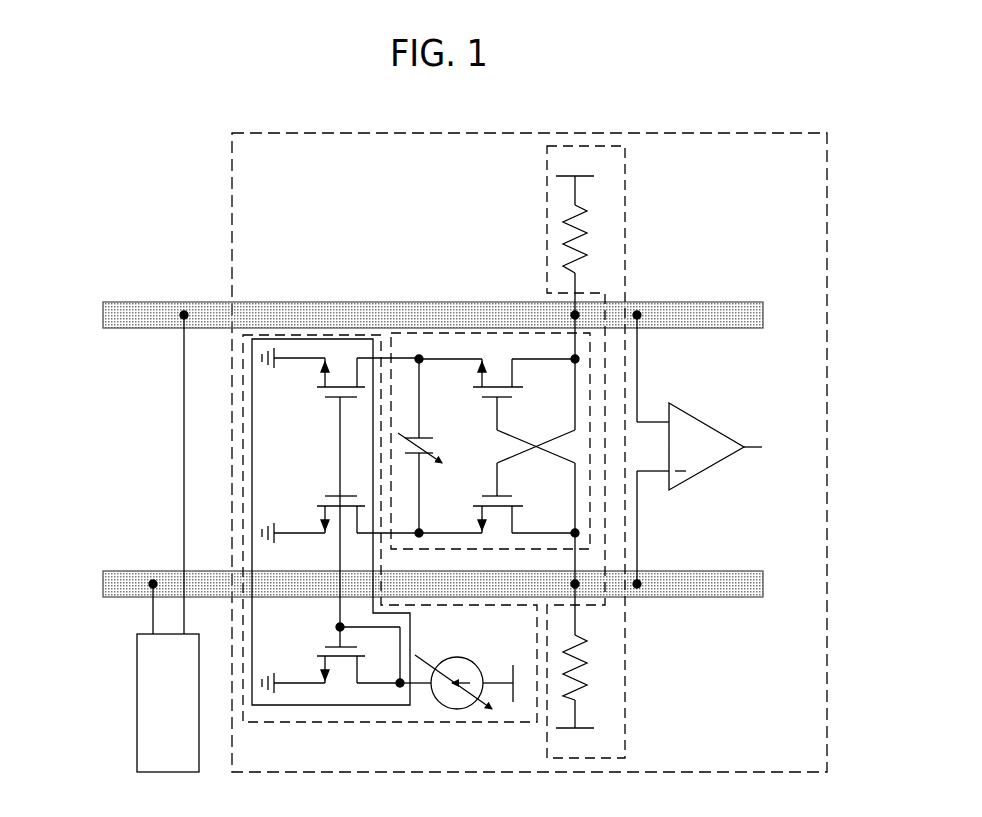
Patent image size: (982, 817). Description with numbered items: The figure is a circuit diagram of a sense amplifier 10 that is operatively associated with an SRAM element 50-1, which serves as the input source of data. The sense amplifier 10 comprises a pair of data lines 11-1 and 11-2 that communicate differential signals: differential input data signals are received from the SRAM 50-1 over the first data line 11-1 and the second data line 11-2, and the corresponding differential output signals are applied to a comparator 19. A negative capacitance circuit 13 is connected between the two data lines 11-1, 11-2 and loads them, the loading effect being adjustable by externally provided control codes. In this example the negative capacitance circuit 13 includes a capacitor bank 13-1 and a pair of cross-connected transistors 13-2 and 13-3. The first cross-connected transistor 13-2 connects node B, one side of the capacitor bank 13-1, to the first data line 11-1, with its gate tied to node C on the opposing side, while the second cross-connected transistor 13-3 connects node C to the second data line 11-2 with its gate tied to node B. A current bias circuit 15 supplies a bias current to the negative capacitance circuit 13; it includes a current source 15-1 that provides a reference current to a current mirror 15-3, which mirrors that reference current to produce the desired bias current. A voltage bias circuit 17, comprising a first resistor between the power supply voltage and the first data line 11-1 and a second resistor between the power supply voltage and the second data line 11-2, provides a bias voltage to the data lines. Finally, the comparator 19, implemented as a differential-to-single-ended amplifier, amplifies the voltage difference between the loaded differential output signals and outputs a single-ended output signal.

The sense amplifier 10 is at (702, 133).
The first data line 11-1 is at (713, 302).
The second data line 11-2 is at (713, 571).
The negative capacitance circuit 13 is at (490, 403).
The capacitor bank 13-1 is at (430, 438).
The first cross-connected transistor 13-2 is at (515, 394).
The second cross-connected transistor 13-3 is at (515, 498).
The current bias circuit 15 is at (390, 489).
The current source 15-1 is at (460, 657).
The current mirror 15-3 is at (335, 339).
The voltage bias circuit 17 is at (627, 195).
The comparator 19 is at (712, 420).
The SRAM element 50-1 is at (137, 704).